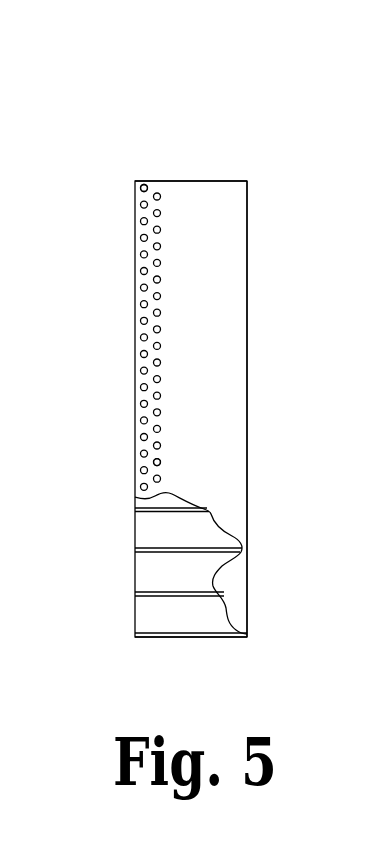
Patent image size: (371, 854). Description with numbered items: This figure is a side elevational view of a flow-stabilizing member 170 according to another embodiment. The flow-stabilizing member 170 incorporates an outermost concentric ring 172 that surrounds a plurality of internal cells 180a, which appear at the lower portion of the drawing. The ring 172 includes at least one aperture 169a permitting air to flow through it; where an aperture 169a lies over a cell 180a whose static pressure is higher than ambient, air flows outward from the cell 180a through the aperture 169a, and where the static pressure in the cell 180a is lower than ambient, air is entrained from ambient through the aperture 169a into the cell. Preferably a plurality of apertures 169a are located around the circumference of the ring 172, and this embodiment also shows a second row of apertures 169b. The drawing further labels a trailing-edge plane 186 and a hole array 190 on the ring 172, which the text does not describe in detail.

The flow-stabilizing member 170 is at (216, 66).
The outermost concentric ring 172 is at (219, 181).
The side wall 186 is at (247, 393).
The array of holes 190 is at (135, 318).
The aperture 169a is at (140, 189).
The second row of apertures 169b is at (154, 463).
The internal cell 180a is at (165, 612).